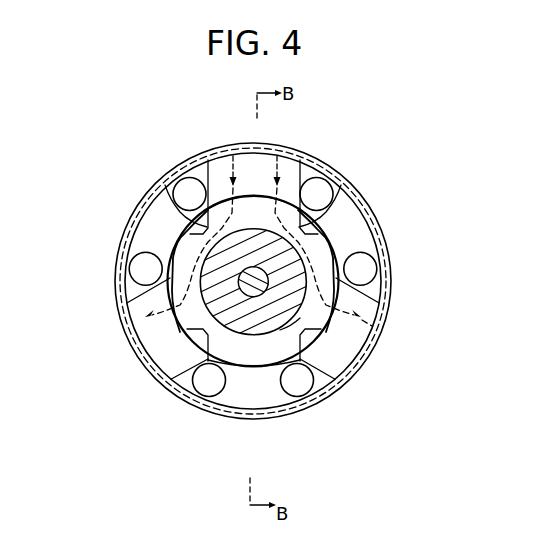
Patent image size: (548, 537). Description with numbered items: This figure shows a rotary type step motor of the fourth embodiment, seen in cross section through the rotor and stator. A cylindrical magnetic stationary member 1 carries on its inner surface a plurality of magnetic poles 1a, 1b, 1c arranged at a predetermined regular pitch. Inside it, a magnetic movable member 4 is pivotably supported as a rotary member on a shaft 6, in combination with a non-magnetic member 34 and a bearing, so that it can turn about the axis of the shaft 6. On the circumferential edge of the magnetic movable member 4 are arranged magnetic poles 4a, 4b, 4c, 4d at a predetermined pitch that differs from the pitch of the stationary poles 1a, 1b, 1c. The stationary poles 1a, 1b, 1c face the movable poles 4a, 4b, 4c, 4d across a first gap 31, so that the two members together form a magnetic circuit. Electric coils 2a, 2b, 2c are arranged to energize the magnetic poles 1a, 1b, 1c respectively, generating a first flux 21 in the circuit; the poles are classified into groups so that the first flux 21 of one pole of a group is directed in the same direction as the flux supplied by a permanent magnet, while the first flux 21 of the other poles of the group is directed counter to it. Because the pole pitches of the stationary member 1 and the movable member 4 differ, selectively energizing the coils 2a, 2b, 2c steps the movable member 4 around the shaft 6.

The magnetic stationary member 1 is at (240, 413).
The magnetic pole 1a is at (266, 158).
The magnetic pole 1b is at (353, 342).
The magnetic pole 1c is at (168, 367).
The electric coil 2a is at (187, 188).
The electric coil 2b is at (362, 270).
The electric coil 2c is at (143, 268).
The magnetic movable member 4 is at (155, 335).
The magnetic pole 4a is at (334, 192).
The magnetic pole 4b is at (322, 254).
The magnetic pole 4c is at (272, 355).
The magnetic pole 4d is at (177, 257).
The shaft 6 is at (240, 284).
The first flux 21 is at (218, 148).
The first gap 31 is at (165, 200).
The non-magnetic member 34 is at (286, 311).